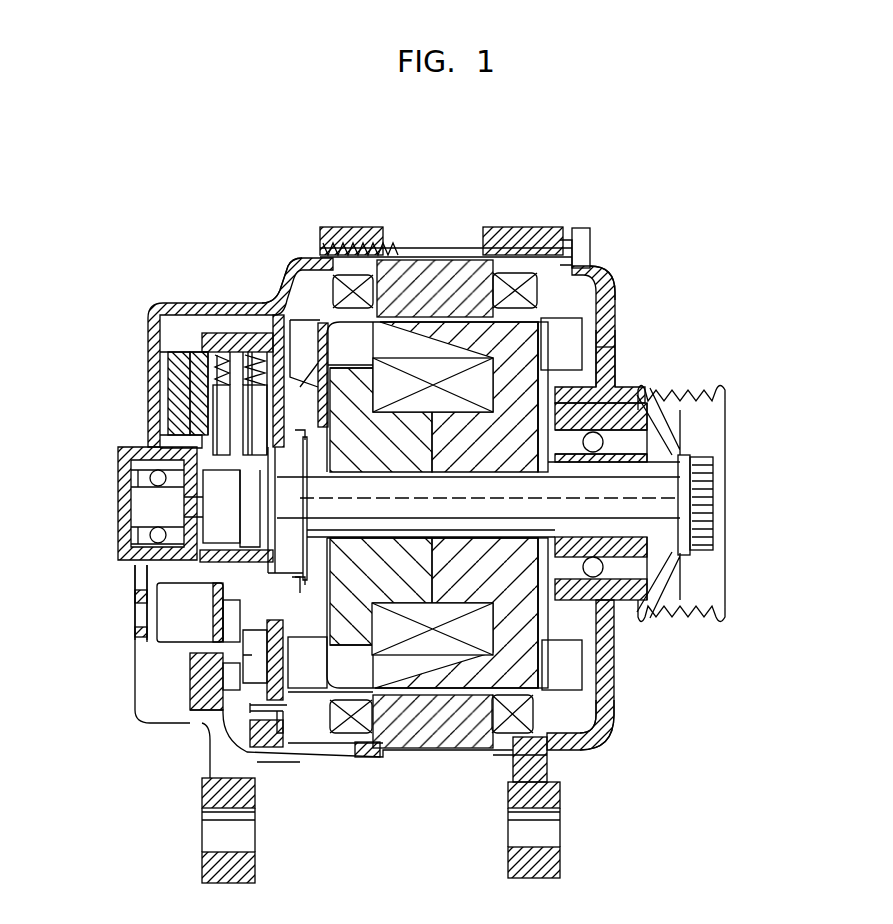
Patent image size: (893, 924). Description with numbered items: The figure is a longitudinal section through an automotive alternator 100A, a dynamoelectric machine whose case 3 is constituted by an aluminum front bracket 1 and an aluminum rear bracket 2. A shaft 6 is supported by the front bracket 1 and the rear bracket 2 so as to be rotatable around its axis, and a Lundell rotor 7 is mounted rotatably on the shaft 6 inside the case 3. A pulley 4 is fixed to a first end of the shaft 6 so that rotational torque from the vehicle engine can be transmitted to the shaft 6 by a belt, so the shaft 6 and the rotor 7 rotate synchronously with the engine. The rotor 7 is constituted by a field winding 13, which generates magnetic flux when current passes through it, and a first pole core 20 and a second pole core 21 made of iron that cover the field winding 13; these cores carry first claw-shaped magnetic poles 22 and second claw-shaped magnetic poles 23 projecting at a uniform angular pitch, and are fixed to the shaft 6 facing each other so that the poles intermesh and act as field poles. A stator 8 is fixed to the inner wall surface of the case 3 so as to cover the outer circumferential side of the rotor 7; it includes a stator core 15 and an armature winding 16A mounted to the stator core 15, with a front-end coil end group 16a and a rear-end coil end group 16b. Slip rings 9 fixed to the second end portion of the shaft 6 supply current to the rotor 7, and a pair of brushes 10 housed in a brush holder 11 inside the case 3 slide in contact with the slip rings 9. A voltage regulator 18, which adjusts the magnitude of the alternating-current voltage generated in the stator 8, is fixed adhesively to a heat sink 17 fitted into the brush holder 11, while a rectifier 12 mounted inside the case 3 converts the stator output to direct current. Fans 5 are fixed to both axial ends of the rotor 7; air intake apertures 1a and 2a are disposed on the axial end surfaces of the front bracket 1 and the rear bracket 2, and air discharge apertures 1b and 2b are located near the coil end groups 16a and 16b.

The automotive alternator 100A is at (150, 168).
The front bracket 1 is at (614, 680).
The air intake aperture 1a is at (606, 362).
The air discharge aperture 1b is at (603, 267).
The rear bracket 2 is at (133, 722).
The air intake aperture 2a is at (140, 612).
The air discharge aperture 2b is at (285, 262).
The case 3 is at (617, 729).
The pulley 4 is at (695, 392).
The fans 5 is at (575, 333).
The shaft 6 is at (653, 497).
The Lundell rotor 7 is at (490, 813).
The stator 8 is at (495, 165).
The slip rings 9 is at (227, 515).
The brushes 10 is at (225, 415).
The brush holder 11 is at (230, 333).
The rectifier 12 is at (188, 613).
The field winding 13 is at (428, 645).
The stator core 15 is at (418, 260).
The armature winding 16A is at (473, 255).
The front-end coil end group 16a is at (518, 272).
The rear-end coil end group 16b is at (340, 274).
The heat sink 17 is at (172, 385).
The voltage regulator 18 is at (187, 370).
The first pole core 20 is at (503, 654).
The second pole core 21 is at (355, 626).
The first claw-shaped magnetic poles 22 is at (560, 250).
The second claw-shaped magnetic poles 23 is at (350, 332).